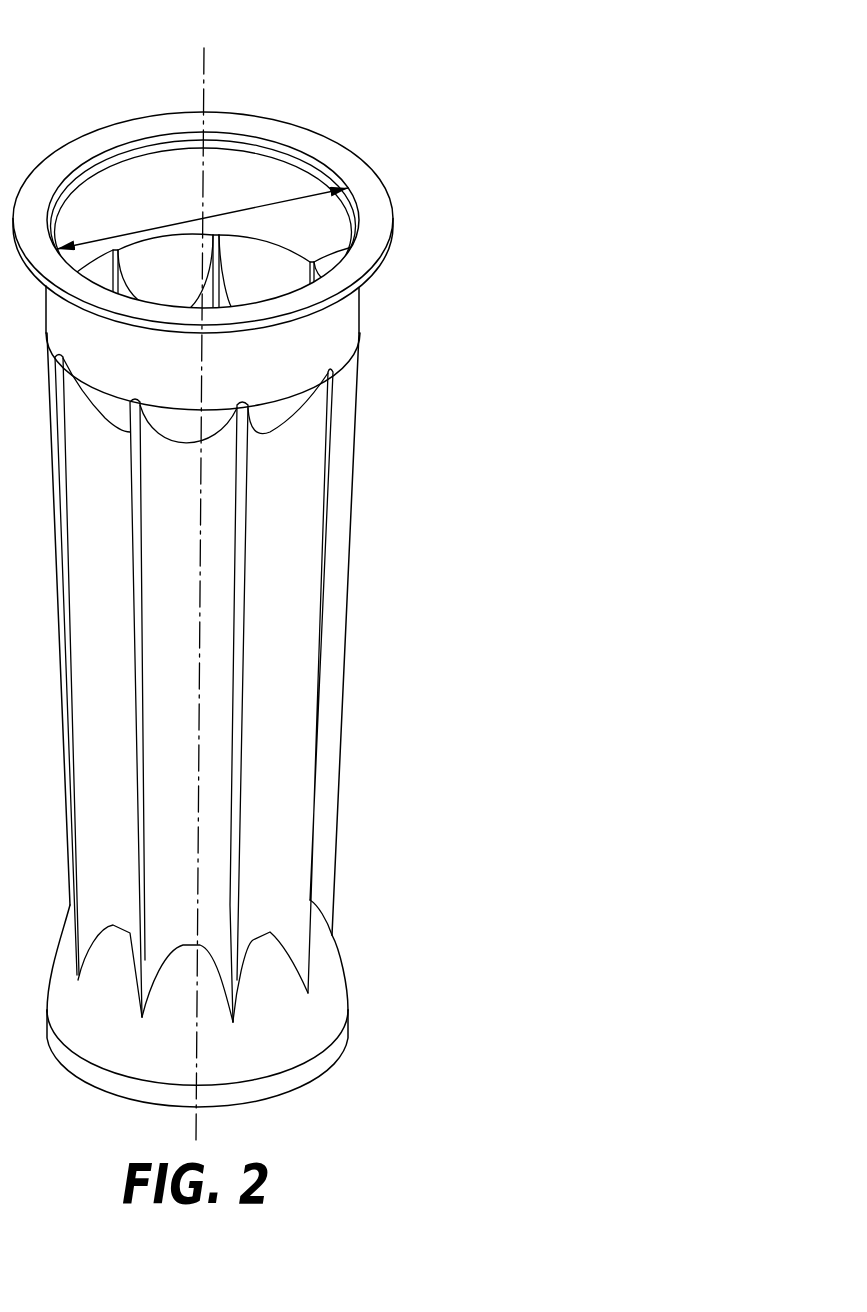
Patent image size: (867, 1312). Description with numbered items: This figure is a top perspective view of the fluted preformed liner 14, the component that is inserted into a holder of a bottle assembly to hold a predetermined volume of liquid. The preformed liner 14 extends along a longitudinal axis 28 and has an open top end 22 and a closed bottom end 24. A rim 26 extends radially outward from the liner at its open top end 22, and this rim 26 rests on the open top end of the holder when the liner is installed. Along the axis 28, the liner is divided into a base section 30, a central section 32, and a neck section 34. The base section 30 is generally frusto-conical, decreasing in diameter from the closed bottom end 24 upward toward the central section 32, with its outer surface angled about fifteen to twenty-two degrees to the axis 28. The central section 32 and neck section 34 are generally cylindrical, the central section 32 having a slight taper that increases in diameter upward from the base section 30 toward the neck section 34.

The preformed liner 14 is at (435, 85).
The open top end 22 is at (240, 180).
The closed bottom end 24 is at (288, 1098).
The rim 26 is at (375, 213).
The longitudinal axis 28 is at (203, 70).
The base section 30 is at (285, 198).
The central section 32 is at (345, 703).
The neck section 34 is at (356, 315).